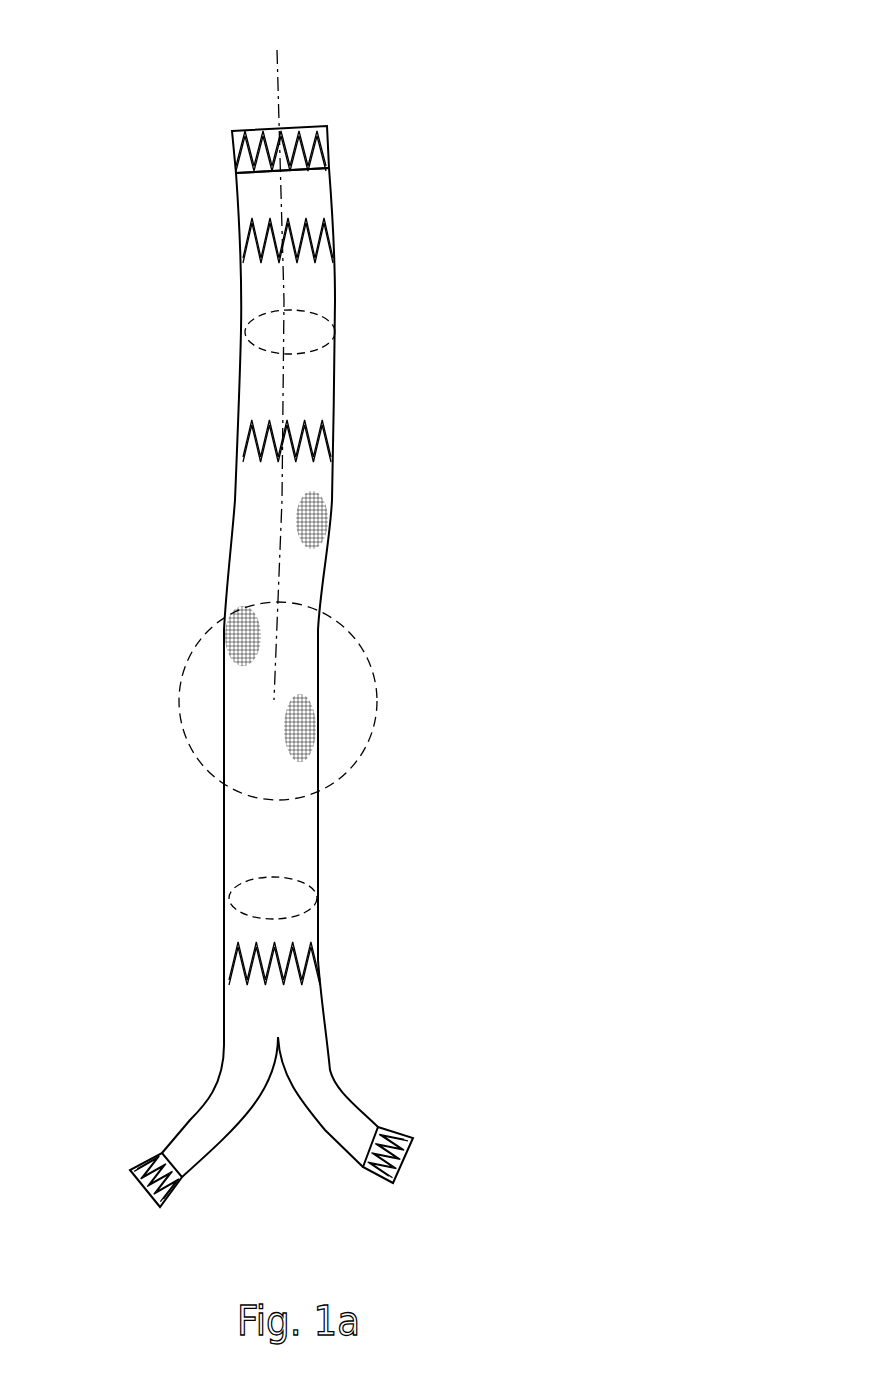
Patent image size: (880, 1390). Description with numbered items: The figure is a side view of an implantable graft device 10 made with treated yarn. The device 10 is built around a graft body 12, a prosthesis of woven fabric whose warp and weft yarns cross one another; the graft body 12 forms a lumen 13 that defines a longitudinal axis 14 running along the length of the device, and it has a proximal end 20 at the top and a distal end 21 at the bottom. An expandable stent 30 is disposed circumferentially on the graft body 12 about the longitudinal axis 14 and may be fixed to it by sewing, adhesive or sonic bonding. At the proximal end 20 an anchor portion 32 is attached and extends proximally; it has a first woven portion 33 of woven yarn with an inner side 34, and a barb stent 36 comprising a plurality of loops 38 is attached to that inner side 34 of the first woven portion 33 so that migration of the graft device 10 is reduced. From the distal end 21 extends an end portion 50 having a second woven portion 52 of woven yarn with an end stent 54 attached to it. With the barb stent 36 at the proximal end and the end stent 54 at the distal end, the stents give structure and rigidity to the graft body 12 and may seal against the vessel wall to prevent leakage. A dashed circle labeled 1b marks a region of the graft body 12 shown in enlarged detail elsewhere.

The implantable graft device 10 is at (431, 61).
The graft body 12 is at (236, 493).
The lumen 13 is at (257, 878).
The longitudinal axis 14 is at (283, 283).
The proximal end 20 is at (232, 131).
The distal end 21 is at (228, 942).
The expandable stent 30 is at (243, 420).
The anchor portion 32 is at (317, 193).
The first woven portion 33 is at (260, 185).
The inner side 34 is at (300, 357).
The barb stent 36 is at (303, 123).
The loops 38 is at (248, 175).
The end portion 50 is at (300, 1020).
The second woven portion 52 is at (245, 1045).
The end stent 54 is at (147, 1187).
The detail region of Fig. 1b is at (378, 690).